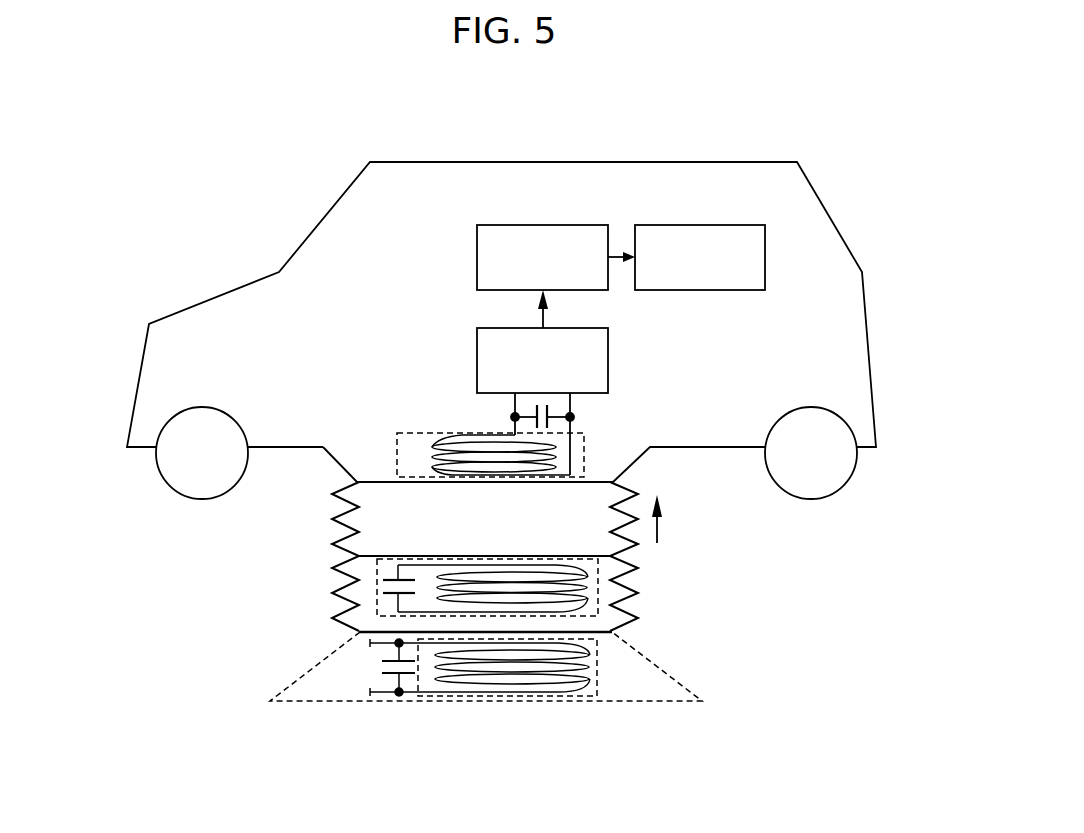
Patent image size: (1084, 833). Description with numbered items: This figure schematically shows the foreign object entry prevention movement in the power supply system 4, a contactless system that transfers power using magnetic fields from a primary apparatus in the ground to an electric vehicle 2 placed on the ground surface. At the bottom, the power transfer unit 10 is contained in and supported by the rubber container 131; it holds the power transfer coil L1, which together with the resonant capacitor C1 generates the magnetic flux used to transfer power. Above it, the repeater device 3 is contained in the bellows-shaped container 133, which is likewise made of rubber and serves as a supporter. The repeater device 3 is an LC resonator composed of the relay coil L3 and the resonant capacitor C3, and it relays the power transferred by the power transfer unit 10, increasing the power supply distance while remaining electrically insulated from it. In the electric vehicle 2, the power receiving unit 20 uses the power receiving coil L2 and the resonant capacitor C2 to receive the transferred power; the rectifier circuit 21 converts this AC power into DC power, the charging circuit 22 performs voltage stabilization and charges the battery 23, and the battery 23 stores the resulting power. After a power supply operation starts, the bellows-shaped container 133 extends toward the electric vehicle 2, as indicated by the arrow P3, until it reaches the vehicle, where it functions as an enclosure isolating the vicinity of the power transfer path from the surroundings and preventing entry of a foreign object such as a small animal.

The electric vehicle 2 is at (449, 162).
The repeater device 3 is at (600, 593).
The power supply system 4 is at (688, 117).
The power transfer unit 10 is at (498, 698).
The power receiving unit 20 is at (585, 447).
The rectifier circuit 21 is at (608, 360).
The charging circuit 22 is at (477, 247).
The battery 23 is at (767, 256).
The container 131 is at (328, 657).
The container 133 is at (334, 519).
The power transfer coil L1 is at (585, 673).
The power receiving coil L2 is at (432, 448).
The relay coil L3 is at (600, 566).
The resonant capacitor C1 is at (393, 675).
The resonant capacitor C2 is at (550, 406).
The resonant capacitor C3 is at (383, 590).
The arrow P3 is at (660, 525).